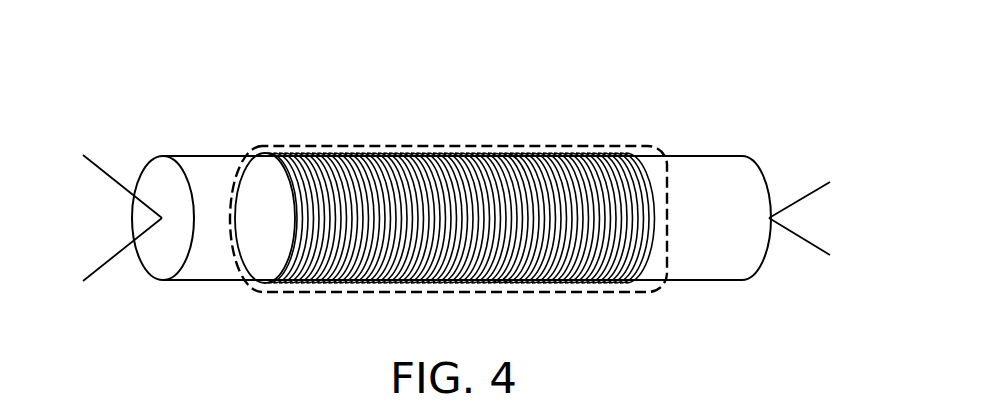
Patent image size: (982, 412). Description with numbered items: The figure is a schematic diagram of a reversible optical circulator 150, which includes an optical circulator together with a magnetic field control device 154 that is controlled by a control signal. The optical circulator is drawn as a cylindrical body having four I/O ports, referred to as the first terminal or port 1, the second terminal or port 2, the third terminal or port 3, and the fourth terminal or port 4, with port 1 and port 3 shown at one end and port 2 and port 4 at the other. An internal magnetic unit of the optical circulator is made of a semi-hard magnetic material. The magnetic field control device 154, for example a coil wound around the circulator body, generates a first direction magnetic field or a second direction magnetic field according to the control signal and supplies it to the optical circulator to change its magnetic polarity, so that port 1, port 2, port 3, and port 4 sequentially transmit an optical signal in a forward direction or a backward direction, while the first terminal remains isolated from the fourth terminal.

The reversible optical circulator 150 is at (673, 103).
The magnetic field control device 154 is at (518, 145).
The port 1 is at (107, 169).
The port 2 is at (817, 184).
The port 3 is at (107, 265).
The port 4 is at (817, 254).